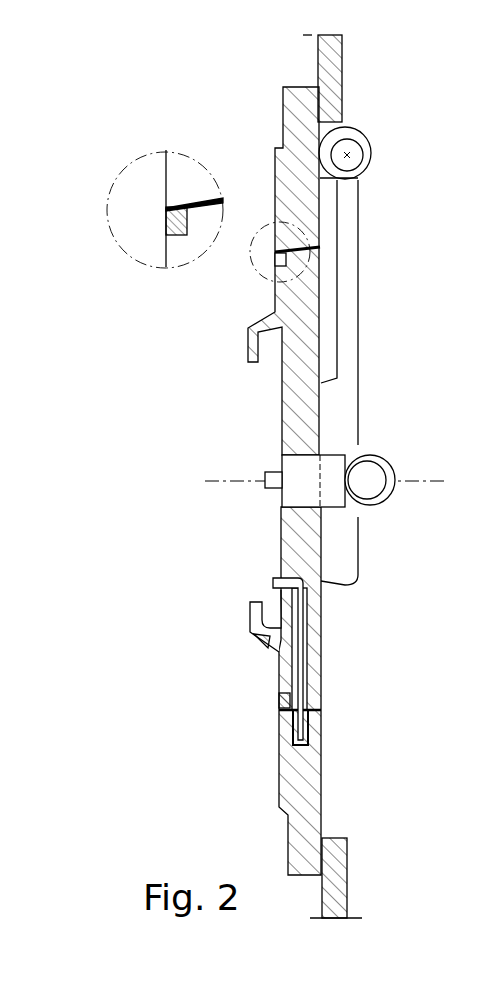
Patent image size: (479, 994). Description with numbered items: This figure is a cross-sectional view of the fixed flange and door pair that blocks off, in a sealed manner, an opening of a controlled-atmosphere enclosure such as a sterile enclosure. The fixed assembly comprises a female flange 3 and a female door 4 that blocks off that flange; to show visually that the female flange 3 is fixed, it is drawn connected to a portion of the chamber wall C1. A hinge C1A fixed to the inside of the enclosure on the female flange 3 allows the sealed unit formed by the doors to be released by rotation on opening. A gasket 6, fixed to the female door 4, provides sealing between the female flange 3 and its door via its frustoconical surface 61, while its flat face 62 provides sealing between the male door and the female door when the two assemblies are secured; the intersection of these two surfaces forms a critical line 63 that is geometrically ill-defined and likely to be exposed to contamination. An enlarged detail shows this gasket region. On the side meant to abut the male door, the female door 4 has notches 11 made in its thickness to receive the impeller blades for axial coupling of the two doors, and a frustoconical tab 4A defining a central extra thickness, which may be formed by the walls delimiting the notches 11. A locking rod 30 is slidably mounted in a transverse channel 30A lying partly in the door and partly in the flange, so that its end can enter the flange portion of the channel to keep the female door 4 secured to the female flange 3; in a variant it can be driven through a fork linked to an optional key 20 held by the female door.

The female flange 3 is at (298, 100).
The female door 4 is at (297, 250).
The frustoconical tab 4A is at (263, 638).
The gasket 6 is at (273, 262).
The notches 11 is at (268, 615).
The key 20 is at (378, 463).
The locking rod 30 is at (302, 630).
The transverse channel 30A is at (309, 735).
The frustoconical surface 61 is at (172, 206).
The flat face 62 is at (170, 228).
The critical line 63 is at (163, 207).
The chamber wall C1 is at (330, 68).
The hinge C1A is at (358, 150).